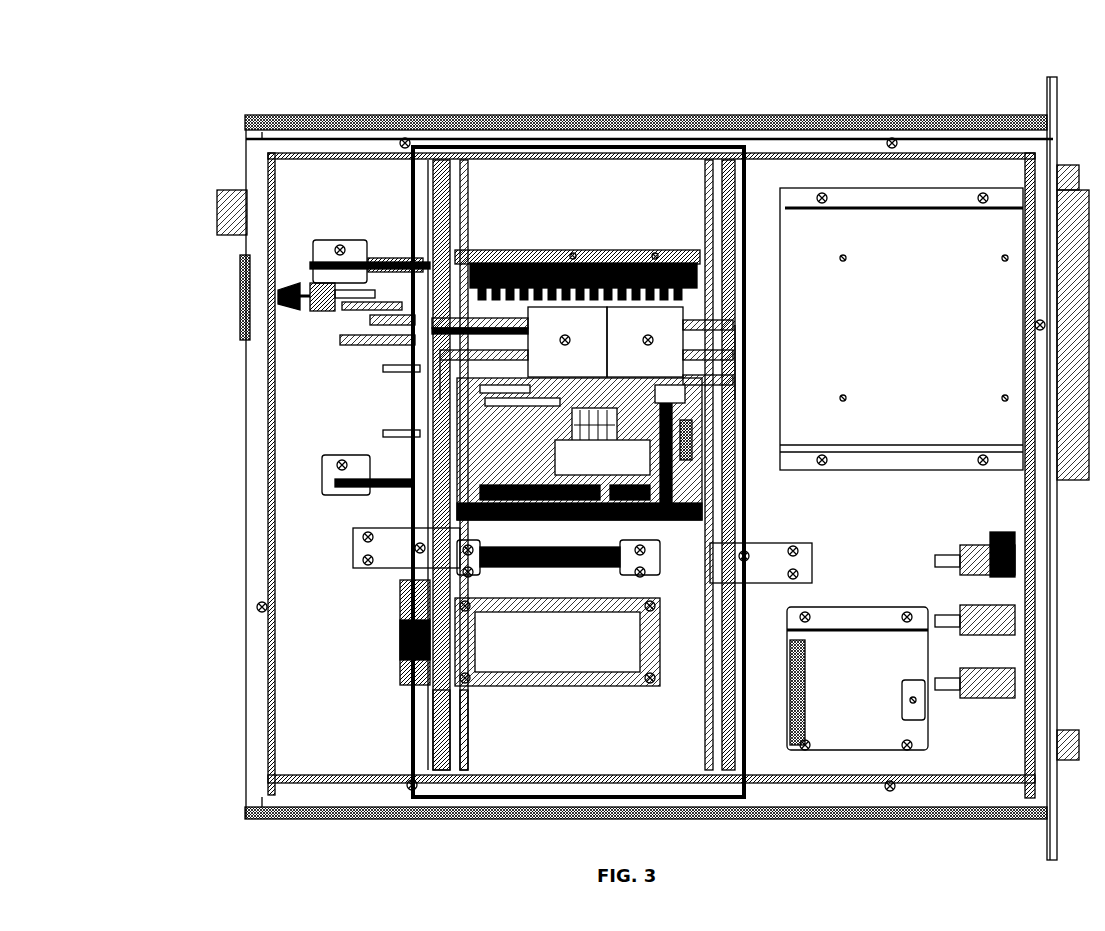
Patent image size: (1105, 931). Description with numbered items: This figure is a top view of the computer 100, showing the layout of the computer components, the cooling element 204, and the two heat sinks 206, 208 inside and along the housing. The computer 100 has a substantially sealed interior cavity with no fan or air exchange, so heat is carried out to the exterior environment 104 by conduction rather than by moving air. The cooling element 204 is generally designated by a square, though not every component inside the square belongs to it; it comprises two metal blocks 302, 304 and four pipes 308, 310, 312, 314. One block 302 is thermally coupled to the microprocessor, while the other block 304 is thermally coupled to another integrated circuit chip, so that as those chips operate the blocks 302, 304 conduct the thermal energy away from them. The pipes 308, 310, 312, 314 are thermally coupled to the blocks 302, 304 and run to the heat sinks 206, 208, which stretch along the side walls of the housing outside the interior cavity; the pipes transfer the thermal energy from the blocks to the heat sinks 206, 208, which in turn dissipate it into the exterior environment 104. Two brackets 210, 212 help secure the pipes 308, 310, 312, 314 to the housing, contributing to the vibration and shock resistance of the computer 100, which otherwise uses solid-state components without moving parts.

The computer 100 is at (890, 78).
The exterior environment 104 is at (150, 474).
The cooling element 204 is at (744, 147).
The heat sink 206 is at (810, 820).
The heat sink 208 is at (665, 114).
The bracket 210 is at (765, 558).
The bracket 212 is at (400, 545).
The block 302 is at (640, 318).
The block 304 is at (536, 318).
The pipe 308 is at (460, 165).
The pipe 310 is at (437, 222).
The pipe 312 is at (433, 703).
The pipe 314 is at (458, 740).